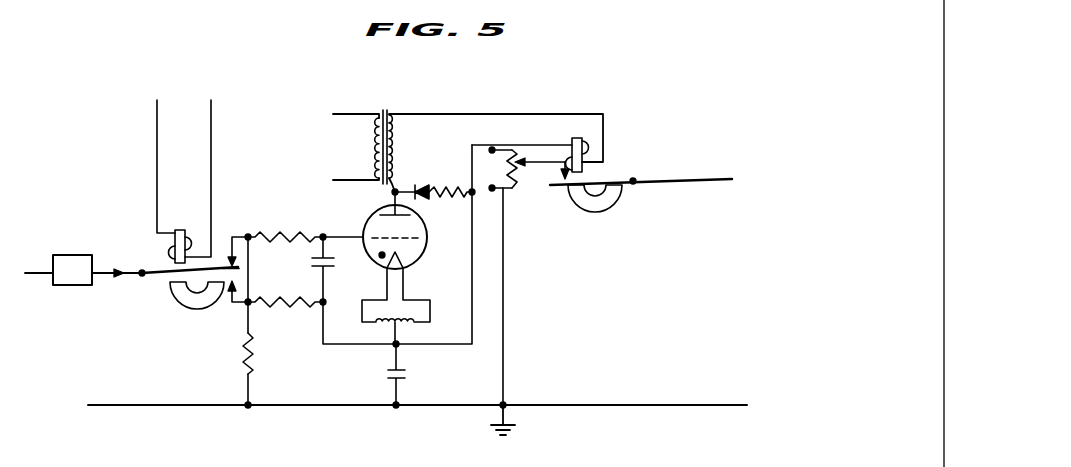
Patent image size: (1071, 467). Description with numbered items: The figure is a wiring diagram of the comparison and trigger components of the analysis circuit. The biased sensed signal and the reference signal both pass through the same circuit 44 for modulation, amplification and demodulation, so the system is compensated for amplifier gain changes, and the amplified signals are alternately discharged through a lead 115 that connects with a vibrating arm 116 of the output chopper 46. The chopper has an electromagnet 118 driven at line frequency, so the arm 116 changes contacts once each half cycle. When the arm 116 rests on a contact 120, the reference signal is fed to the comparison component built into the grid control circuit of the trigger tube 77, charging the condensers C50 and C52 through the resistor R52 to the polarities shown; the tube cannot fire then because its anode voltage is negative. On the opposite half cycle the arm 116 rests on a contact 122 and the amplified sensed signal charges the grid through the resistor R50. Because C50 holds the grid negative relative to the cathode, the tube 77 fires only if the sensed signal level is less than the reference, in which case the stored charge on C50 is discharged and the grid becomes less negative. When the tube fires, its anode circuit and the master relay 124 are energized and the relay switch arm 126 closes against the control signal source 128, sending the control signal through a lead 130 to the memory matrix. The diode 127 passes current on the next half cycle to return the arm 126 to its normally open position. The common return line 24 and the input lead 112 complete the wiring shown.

The ground bus line 24 is at (120, 406).
The circuit 44 is at (70, 286).
The output chopper 46 is at (148, 263).
The trigger tube 77 is at (412, 268).
The input lead 112 is at (34, 272).
The lead 115 is at (108, 275).
The vibrating arm 116 is at (158, 275).
The electromagnet 118 is at (183, 232).
The contact 120 is at (232, 306).
The contact 122 is at (222, 264).
The master relay 124 is at (590, 158).
The relay switch arm 126 is at (557, 188).
The diode 127 is at (420, 186).
The control signal source 128 is at (535, 165).
The lead 130 is at (690, 181).
The resistor R50 is at (292, 233).
The resistor R52 is at (290, 310).
The condenser C50 is at (312, 262).
The condenser C52 is at (386, 378).